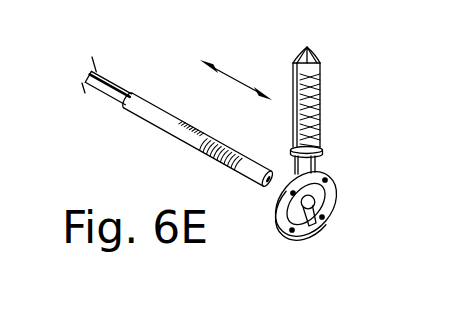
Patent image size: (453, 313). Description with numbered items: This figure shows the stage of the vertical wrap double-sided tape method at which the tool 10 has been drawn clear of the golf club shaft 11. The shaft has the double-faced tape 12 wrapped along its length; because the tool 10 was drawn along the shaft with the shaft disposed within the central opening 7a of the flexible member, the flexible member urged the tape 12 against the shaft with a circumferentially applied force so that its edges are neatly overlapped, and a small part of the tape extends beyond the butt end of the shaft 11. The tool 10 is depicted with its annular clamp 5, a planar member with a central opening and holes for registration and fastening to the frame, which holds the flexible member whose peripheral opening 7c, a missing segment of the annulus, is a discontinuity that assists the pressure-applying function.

The tool 10 is at (340, 97).
The golf club shaft 11 is at (100, 89).
The double-faced tape 12 is at (159, 121).
The clamp 5 is at (331, 199).
The central opening 7a is at (283, 225).
The peripheral opening 7c is at (304, 228).